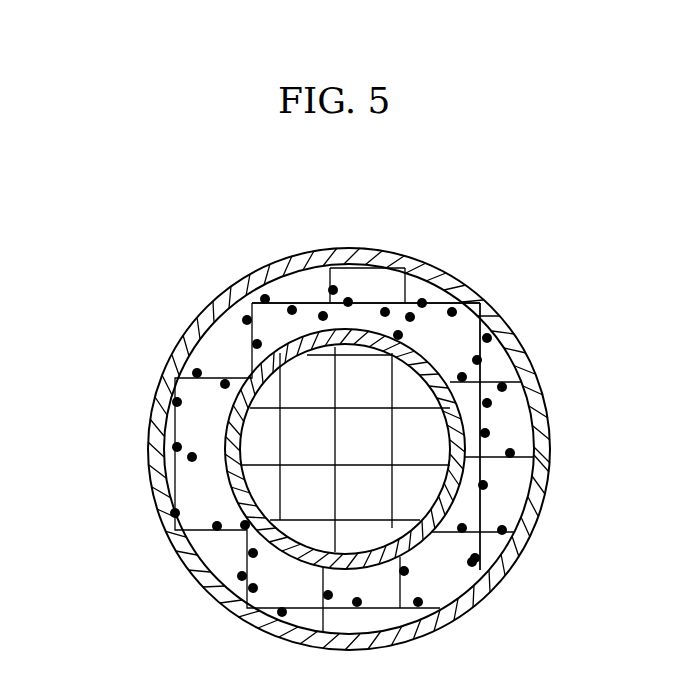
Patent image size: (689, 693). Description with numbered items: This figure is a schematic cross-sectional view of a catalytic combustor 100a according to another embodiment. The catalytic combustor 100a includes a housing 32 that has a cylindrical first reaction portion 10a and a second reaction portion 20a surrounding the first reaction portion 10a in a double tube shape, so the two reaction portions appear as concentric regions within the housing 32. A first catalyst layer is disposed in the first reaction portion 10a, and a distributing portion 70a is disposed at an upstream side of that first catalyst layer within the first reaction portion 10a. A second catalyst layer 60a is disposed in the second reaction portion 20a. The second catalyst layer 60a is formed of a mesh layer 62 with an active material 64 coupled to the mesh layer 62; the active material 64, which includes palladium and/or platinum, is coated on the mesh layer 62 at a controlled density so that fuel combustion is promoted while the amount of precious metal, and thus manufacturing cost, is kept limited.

The catalytic combustor 100a is at (158, 272).
The housing 32 is at (420, 262).
The second reaction portion 20a is at (487, 300).
The first reaction portion 10a is at (408, 387).
The second catalyst layer 60a is at (493, 404).
The mesh layer 62 is at (482, 413).
The active material 64 is at (510, 453).
The distributing portion 70a is at (393, 494).